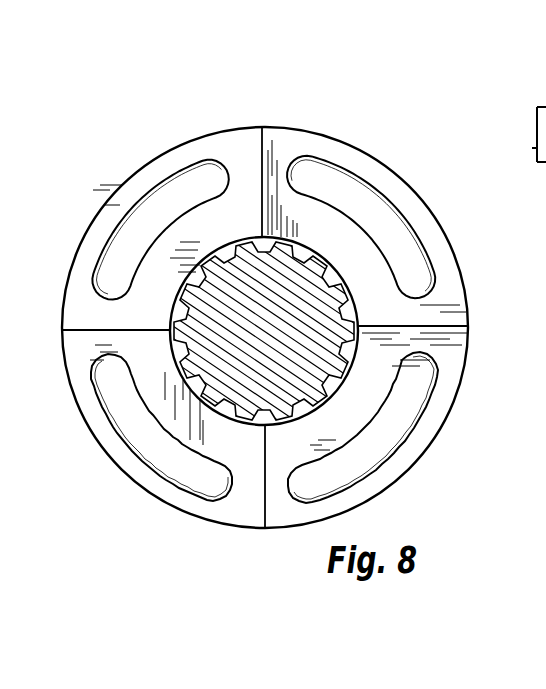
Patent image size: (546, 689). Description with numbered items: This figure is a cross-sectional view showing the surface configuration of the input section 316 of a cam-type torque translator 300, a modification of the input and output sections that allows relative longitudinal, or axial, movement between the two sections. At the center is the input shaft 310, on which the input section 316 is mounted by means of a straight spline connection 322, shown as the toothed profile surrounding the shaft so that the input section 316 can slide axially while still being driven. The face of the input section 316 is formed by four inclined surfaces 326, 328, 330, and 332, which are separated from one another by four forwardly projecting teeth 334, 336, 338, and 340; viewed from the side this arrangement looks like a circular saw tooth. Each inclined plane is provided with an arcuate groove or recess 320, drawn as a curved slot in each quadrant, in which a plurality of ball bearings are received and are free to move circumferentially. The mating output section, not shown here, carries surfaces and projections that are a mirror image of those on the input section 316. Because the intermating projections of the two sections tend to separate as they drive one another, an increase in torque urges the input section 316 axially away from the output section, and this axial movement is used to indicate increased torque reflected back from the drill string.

The cam-type torque translator 300 is at (131, 114).
The input shaft 310 is at (322, 331).
The input section 316 is at (337, 134).
The arcuate groove 320 is at (405, 213).
The straight spline connection 322 is at (347, 378).
The inclined surface 326 is at (391, 222).
The inclined surface 328 is at (193, 150).
The inclined surface 330 is at (158, 490).
The inclined surface 332 is at (430, 455).
The forwardly projecting tooth 334 is at (256, 128).
The forwardly projecting tooth 336 is at (119, 329).
The forwardly projecting tooth 338 is at (263, 518).
The forwardly projecting tooth 340 is at (443, 326).